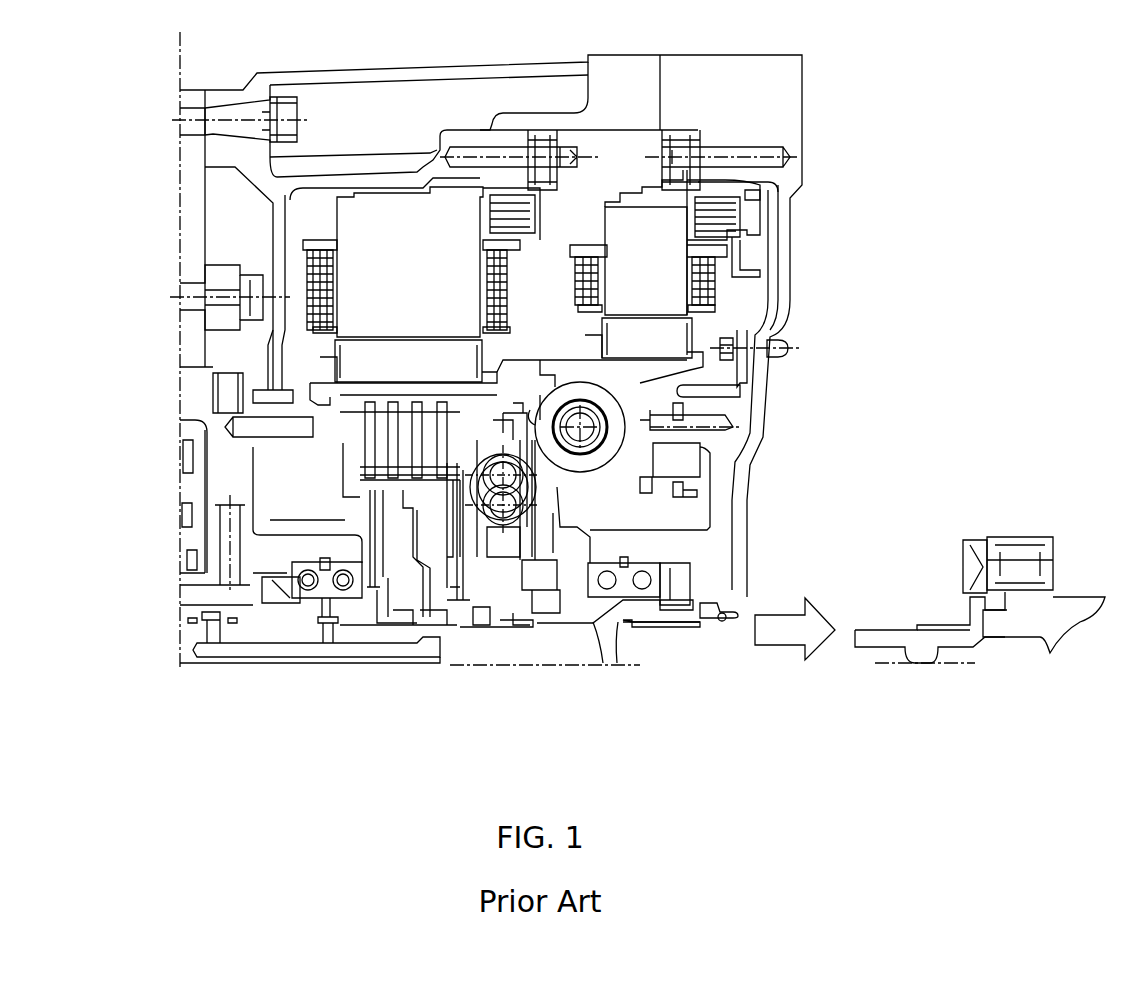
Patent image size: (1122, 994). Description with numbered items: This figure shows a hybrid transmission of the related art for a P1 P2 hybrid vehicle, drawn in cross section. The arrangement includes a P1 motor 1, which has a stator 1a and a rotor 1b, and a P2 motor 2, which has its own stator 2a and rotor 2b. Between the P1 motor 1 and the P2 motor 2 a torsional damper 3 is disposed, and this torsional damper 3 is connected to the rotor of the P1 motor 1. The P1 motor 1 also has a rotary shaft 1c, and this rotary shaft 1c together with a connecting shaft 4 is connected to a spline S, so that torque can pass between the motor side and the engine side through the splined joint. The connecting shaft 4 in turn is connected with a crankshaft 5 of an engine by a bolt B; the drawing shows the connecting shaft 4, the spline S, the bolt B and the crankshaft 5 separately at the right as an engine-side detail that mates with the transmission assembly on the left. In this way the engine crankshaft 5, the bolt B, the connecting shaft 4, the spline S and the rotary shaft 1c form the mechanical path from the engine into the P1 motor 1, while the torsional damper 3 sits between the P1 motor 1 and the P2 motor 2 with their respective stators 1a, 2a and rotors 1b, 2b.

The P1 motor 1 is at (690, 238).
The stator 1a is at (657, 277).
The rotor 1b is at (627, 453).
The rotary shaft 1c is at (707, 618).
The P2 motor 2 is at (333, 217).
The stator 2a is at (363, 268).
The rotor 2b is at (333, 462).
The torsional damper 3 is at (620, 410).
The connecting shaft 4 is at (878, 630).
The crankshaft 5 is at (1025, 627).
The bolt B is at (977, 542).
The spline S is at (933, 630).